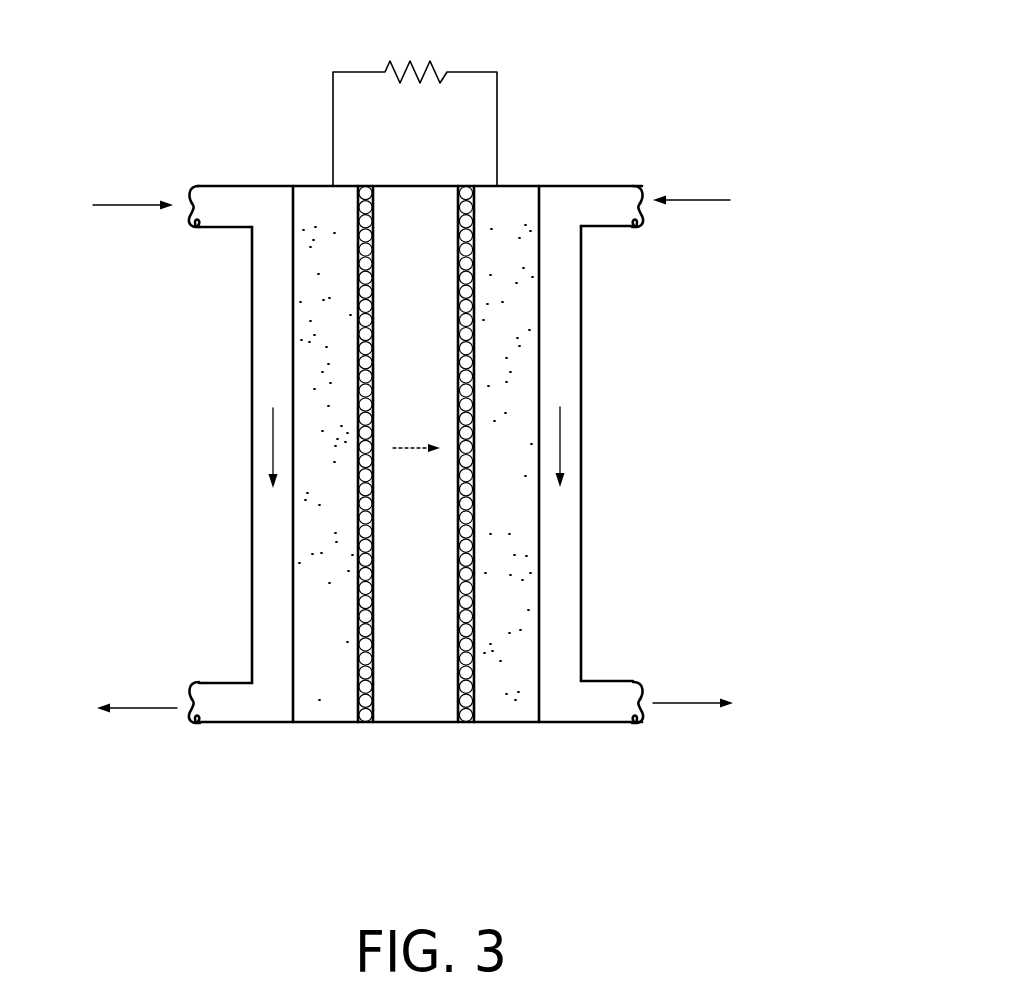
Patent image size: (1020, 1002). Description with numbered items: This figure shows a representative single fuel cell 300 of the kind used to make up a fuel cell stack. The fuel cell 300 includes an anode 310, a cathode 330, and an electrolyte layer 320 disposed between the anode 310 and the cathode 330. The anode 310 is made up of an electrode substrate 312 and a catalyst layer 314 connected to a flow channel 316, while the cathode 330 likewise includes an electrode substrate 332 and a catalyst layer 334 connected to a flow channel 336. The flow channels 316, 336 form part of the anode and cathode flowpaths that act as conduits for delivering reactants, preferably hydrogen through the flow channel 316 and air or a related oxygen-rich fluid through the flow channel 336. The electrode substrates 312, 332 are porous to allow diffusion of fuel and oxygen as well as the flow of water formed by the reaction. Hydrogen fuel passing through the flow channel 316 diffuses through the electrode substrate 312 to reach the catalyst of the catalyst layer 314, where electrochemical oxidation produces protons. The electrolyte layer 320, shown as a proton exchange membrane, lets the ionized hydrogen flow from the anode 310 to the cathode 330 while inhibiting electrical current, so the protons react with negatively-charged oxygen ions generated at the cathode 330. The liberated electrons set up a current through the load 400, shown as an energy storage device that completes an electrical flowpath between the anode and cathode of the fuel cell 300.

The fuel cell 300 is at (175, 94).
The anode 310 is at (330, 460).
The electrode substrate 312 is at (303, 192).
The catalyst layer 314 is at (363, 192).
The flow channel 316 is at (258, 308).
The electrolyte layer 320 is at (465, 733).
The cathode 330 is at (502, 460).
The electrode substrate 332 is at (525, 192).
The catalyst layer 334 is at (465, 192).
The flow channel 336 is at (573, 305).
The load 400 is at (432, 55).